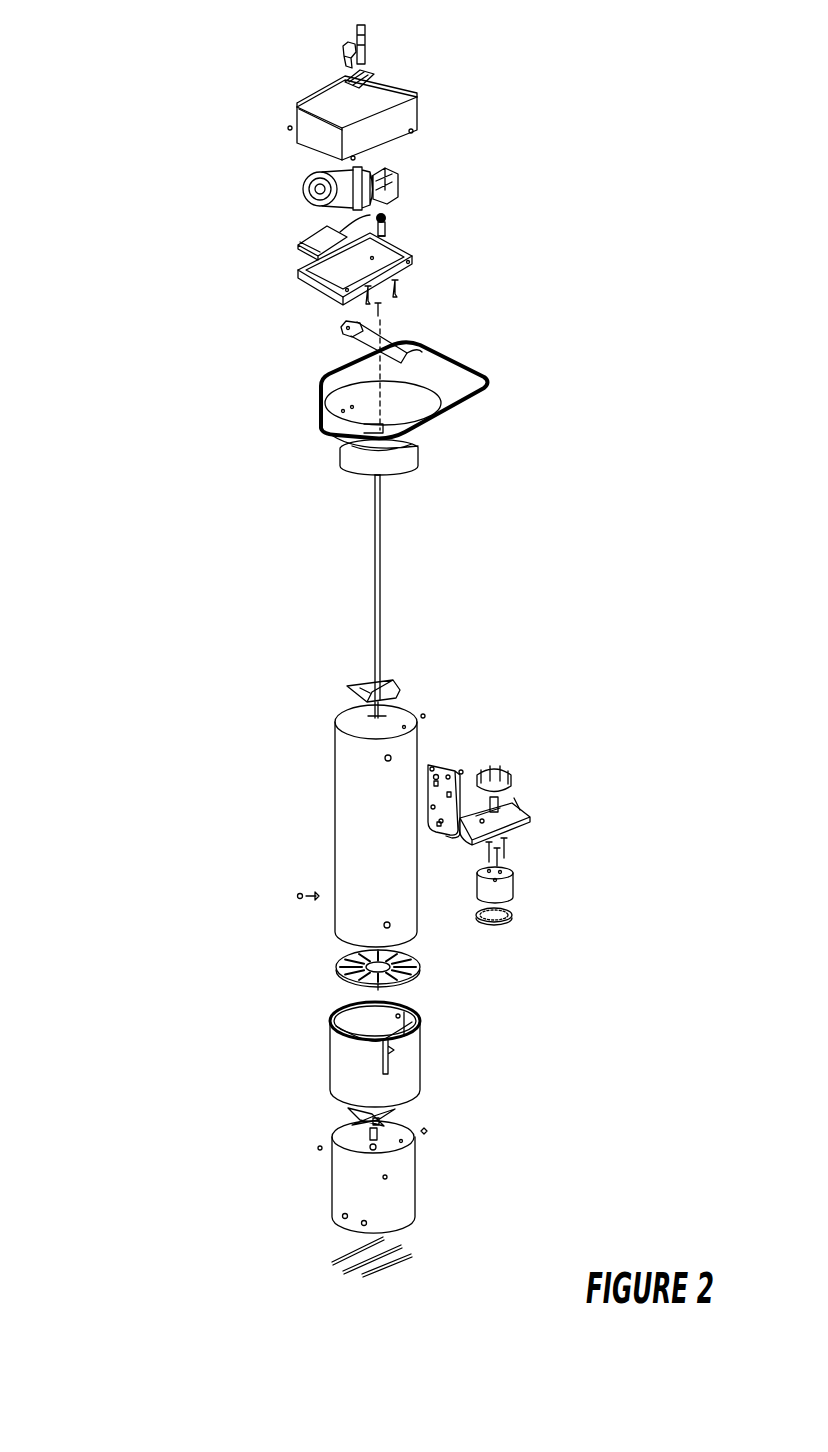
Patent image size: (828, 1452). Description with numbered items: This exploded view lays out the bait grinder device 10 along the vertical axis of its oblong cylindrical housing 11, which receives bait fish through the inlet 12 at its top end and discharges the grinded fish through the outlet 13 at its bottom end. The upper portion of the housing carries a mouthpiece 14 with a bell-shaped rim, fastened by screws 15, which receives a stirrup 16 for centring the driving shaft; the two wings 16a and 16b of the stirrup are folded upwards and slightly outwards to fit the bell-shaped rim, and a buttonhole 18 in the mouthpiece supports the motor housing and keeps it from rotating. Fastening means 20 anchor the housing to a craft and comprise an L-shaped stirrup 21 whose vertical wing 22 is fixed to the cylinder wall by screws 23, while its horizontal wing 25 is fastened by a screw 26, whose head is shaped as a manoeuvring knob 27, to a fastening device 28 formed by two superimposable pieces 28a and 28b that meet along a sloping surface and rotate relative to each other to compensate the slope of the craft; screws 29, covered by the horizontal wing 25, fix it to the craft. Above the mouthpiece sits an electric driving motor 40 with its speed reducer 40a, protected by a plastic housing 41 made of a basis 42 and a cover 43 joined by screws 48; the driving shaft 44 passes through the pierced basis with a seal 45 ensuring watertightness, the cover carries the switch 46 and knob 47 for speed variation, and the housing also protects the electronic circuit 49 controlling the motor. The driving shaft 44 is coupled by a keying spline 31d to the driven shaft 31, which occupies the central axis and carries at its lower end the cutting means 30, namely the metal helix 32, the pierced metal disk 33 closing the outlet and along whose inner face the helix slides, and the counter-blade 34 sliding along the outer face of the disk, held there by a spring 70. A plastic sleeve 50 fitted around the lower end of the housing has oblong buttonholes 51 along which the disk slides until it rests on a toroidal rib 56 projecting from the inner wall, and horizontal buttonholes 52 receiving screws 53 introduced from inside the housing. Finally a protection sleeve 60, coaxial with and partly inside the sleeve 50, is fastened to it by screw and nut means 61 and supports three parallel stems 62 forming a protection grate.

The device 10 is at (168, 670).
The housing 11 is at (352, 802).
The inlet 12 is at (360, 727).
The outlet 13 is at (335, 948).
The mouthpiece 14 is at (458, 412).
The screws 15 is at (425, 715).
The stirrup 16 is at (383, 335).
The wing 16a is at (345, 332).
The wing 16b is at (462, 375).
The buttonhole 18 is at (324, 428).
The fastening means 20 is at (540, 791).
The L-shaped stirrup 21 is at (447, 838).
The vertical wing 22 is at (462, 850).
The screws 23 is at (447, 805).
The horizontal wing 25 is at (490, 817).
The screw 26 is at (514, 798).
The manoeuvring knob 27 is at (492, 768).
The fastening device 28 is at (516, 900).
The superimposable piece 28a is at (505, 876).
The superimposable piece 28b is at (512, 915).
The screws 29 is at (497, 857).
The cutting means 30 is at (348, 658).
The shaft 31 is at (375, 575).
The keying spline 31d is at (390, 485).
The helix 32 is at (392, 693).
The pierced metal disk 33 is at (417, 980).
The counter-blade 34 is at (380, 1115).
The electric driving motor 40 is at (308, 183).
The speed reducer 40a is at (398, 181).
The housing 41 is at (290, 111).
The basis 42 is at (312, 278).
The cover 43 is at (403, 110).
The driving shaft 44 is at (392, 209).
The seal 45 is at (388, 224).
The switch 46 is at (366, 38).
The knob 47 is at (355, 48).
The screws 48 is at (355, 158).
The electronic circuit 49 is at (298, 240).
The sleeve 50 is at (333, 1052).
The buttonholes 51 is at (395, 1068).
The horizontal buttonholes 52 is at (400, 1055).
The screws 53 is at (313, 893).
The toroidal rib 56 is at (372, 1003).
The sleeve 60 is at (415, 1187).
The screw and nut means 61 is at (385, 1177).
The stems 62 is at (383, 1263).
The spring 70 is at (370, 1132).